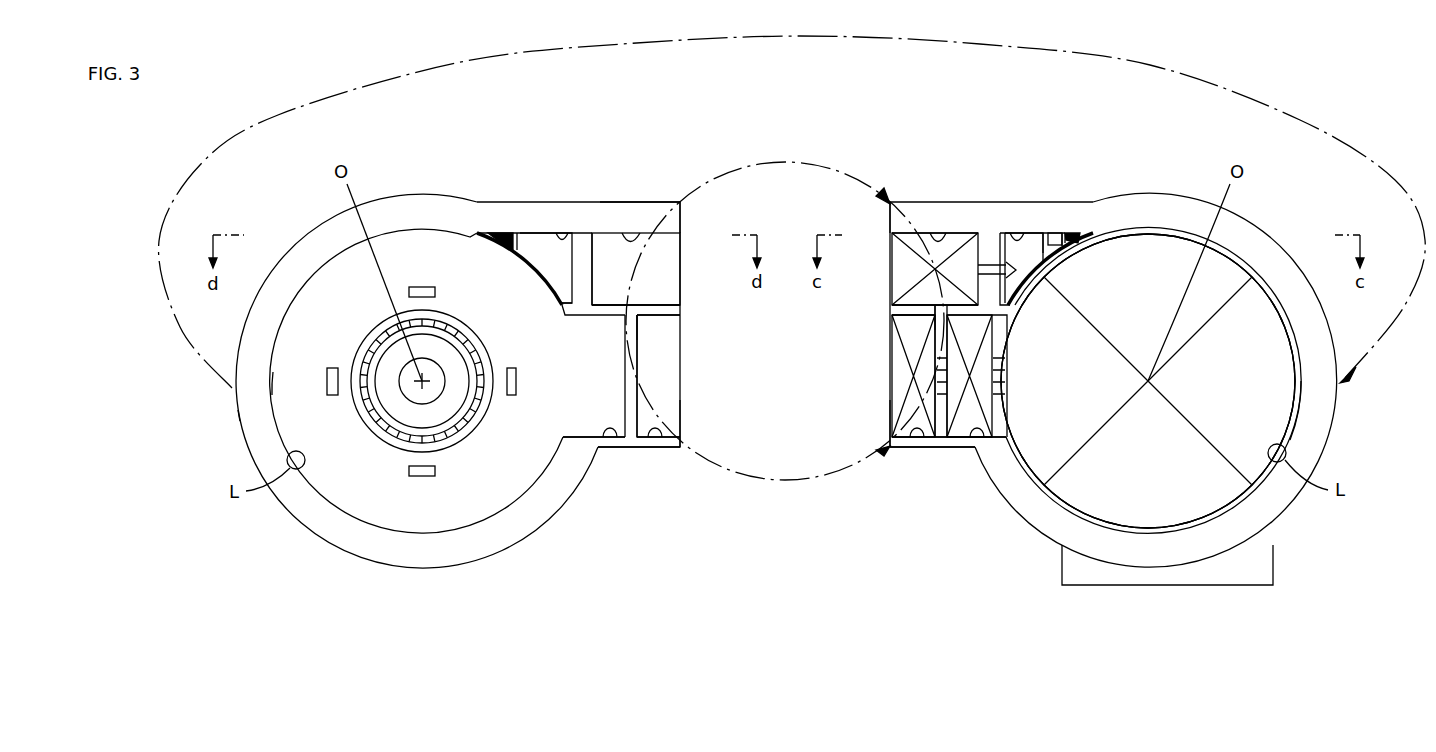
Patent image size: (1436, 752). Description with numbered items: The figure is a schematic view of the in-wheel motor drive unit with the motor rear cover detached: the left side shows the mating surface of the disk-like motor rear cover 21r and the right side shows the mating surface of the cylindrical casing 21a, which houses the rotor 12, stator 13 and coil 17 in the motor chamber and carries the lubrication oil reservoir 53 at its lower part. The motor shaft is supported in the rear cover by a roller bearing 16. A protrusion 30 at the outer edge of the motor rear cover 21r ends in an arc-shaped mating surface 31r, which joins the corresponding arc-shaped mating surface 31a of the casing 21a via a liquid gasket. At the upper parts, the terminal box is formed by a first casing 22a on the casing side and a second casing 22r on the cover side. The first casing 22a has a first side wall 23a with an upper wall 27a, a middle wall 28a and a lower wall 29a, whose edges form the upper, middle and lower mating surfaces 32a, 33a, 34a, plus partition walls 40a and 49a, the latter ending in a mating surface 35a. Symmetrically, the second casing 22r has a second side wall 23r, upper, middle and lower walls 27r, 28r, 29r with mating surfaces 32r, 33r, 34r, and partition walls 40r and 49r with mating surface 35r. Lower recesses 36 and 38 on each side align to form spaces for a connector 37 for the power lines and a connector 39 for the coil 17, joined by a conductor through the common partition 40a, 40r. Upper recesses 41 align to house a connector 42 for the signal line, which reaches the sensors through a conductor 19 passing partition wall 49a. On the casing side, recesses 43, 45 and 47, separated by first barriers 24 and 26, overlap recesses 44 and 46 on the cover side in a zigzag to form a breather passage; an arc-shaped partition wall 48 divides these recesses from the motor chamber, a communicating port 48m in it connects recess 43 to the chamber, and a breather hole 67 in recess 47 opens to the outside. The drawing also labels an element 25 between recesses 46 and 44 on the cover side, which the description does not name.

The motor rear cover 21r is at (400, 196).
The casing 21a is at (1176, 196).
The second casing 22r is at (600, 198).
The first casing 22a is at (970, 198).
The partition wall 48 is at (543, 289).
The communicating port 48m is at (1050, 283).
The recess 46 is at (519, 235).
The drive block 25 is at (537, 240).
The recess 44 is at (568, 233).
The recess 41 is at (628, 233).
The upper mating surface 32r is at (663, 224).
The upper mating surface 32a is at (918, 224).
The upper wall 27r is at (681, 216).
The upper wall 27a is at (890, 219).
The partition wall 49r is at (592, 258).
The partition wall 49a is at (915, 240).
The mating surface 35r is at (580, 288).
The mating surface 35a is at (905, 300).
The middle wall 28r is at (680, 308).
The middle wall 28a is at (920, 305).
The middle mating surface 33r is at (655, 313).
The middle mating surface 33a is at (920, 313).
The second side wall 23r is at (680, 362).
The first side wall 23a is at (900, 346).
The partition wall 40r is at (637, 395).
The partition wall 40a is at (935, 396).
The lower mating surface 34r is at (672, 437).
The lower mating surface 34a is at (892, 428).
The lower wall 29r is at (680, 445).
The lower wall 29a is at (892, 447).
The recess 38 is at (616, 432).
The recess 36 is at (656, 432).
The connector 39 is at (962, 428).
The connector 37 is at (900, 378).
The protrusion 30 is at (240, 421).
The mating surface 31r is at (264, 440).
The mating surface 31a is at (1310, 437).
The roller bearing 16 is at (393, 449).
The conductor 19 is at (1003, 257).
The first barrier 24 is at (1013, 240).
The first barrier 26 is at (1055, 240).
The recess 47 is at (1075, 238).
The recess 43 is at (1010, 240).
The recess 45 is at (1043, 250).
The breather hole 67 is at (1058, 243).
The connector 42 is at (907, 268).
The lubrication oil reservoir 53 is at (1265, 560).
The rotor 12 is at (1145, 503).
The stator 13 is at (1148, 381).
The coil 17 is at (1148, 381).